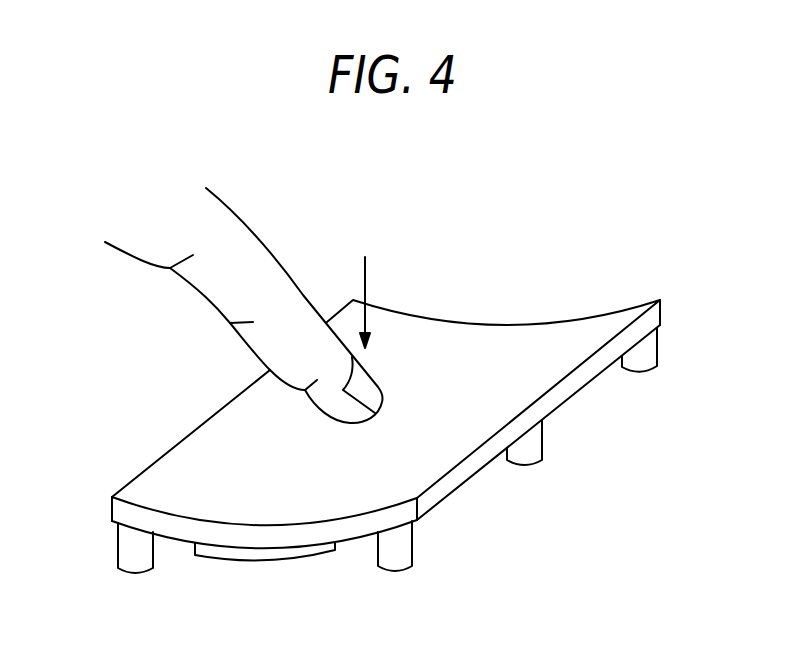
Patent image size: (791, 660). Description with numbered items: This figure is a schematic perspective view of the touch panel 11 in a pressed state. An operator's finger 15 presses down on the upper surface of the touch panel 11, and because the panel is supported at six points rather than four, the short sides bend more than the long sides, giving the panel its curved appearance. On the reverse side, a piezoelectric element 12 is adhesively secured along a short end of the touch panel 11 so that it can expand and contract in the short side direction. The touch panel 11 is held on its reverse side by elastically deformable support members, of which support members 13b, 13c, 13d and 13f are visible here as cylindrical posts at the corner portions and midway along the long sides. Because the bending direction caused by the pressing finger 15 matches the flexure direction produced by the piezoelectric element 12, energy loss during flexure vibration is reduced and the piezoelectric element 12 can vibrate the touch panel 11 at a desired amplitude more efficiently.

The touch panel 11 is at (210, 453).
The piezoelectric element 12 is at (265, 560).
The support member 13b is at (118, 555).
The support member 13c is at (412, 562).
The support member 13d is at (650, 357).
The support member 13f is at (538, 452).
The finger 15 is at (242, 253).